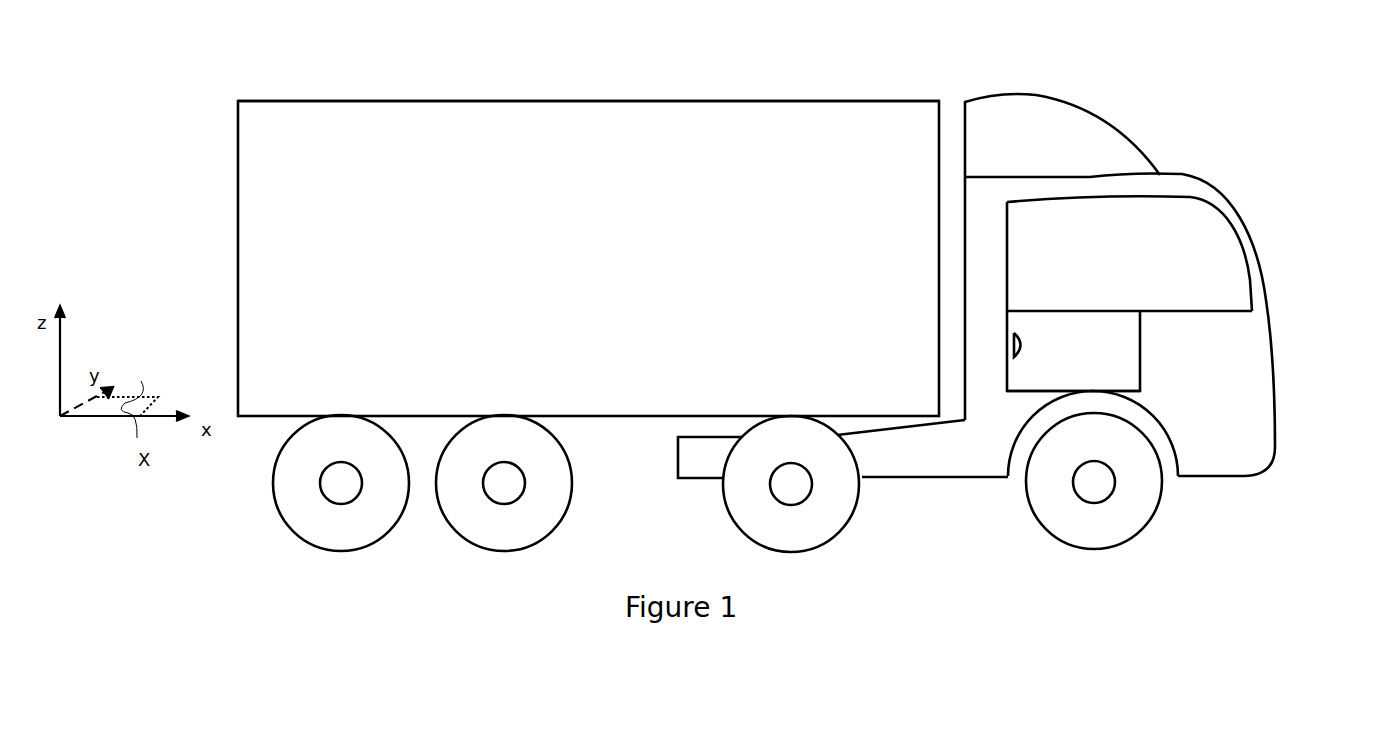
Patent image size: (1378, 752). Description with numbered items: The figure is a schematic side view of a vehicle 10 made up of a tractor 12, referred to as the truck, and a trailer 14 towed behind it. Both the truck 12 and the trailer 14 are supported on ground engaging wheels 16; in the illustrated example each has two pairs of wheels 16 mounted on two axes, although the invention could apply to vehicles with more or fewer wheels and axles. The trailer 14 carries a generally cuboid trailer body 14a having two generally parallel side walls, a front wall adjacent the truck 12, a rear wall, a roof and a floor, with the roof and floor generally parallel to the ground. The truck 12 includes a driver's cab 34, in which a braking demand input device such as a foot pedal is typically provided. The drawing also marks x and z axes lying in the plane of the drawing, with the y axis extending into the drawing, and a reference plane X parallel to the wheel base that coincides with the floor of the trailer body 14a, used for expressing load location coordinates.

The vehicle 10 is at (847, 70).
The tractor 12 is at (1273, 372).
The trailer 14 is at (367, 98).
The trailer body 14a is at (637, 145).
The wheels 16 is at (508, 527).
The driver's cab 34 is at (1122, 375).